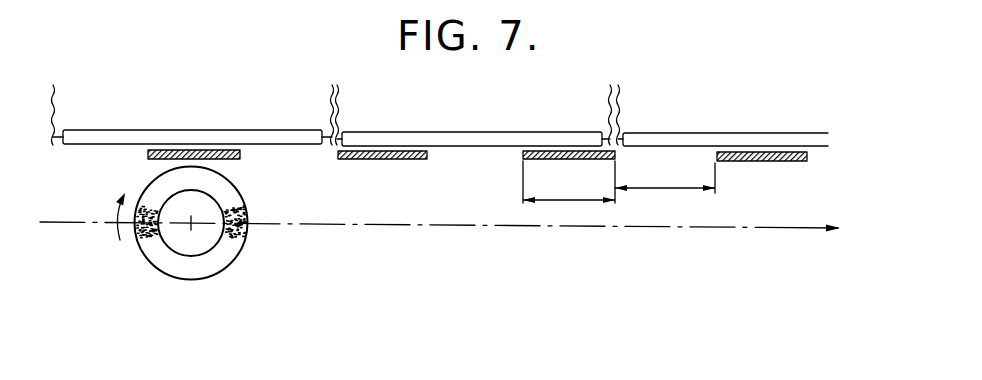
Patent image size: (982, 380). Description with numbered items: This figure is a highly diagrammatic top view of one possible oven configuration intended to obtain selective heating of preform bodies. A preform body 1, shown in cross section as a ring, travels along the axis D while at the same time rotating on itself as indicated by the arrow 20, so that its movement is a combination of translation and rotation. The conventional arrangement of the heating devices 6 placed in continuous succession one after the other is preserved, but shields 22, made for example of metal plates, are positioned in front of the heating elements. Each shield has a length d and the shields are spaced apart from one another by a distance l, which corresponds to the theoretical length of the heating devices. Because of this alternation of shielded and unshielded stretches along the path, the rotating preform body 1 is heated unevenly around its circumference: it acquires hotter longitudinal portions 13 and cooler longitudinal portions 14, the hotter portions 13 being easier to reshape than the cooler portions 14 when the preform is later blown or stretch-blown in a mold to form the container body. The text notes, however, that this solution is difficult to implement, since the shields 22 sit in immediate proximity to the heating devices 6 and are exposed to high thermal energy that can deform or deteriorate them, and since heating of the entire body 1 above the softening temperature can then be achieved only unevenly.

The preform body 1 is at (198, 233).
The heating devices 6 is at (184, 131).
The hotter longitudinal portions 13 is at (247, 212).
The cooler longitudinal portions 14 is at (212, 182).
The arrow indicating rotation of the preform 20 is at (116, 237).
The shields 22 is at (147, 160).
The axis of rotation A is at (189, 226).
The axis of travel D is at (781, 230).
The length of the shields d is at (569, 183).
The spacing between the shields l is at (660, 183).